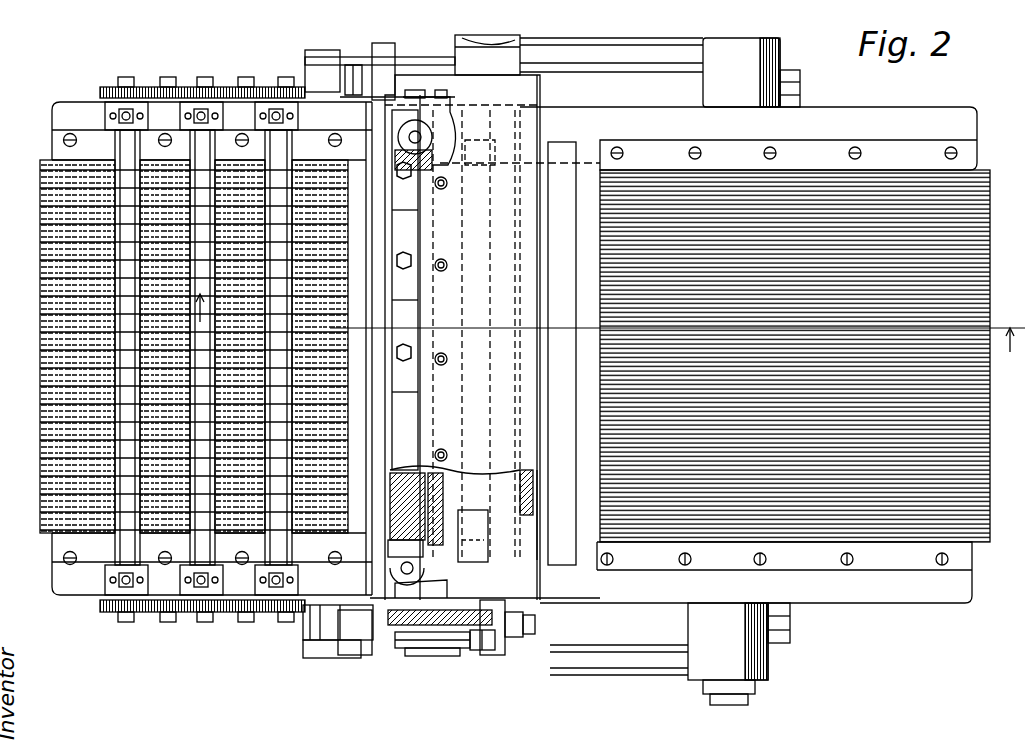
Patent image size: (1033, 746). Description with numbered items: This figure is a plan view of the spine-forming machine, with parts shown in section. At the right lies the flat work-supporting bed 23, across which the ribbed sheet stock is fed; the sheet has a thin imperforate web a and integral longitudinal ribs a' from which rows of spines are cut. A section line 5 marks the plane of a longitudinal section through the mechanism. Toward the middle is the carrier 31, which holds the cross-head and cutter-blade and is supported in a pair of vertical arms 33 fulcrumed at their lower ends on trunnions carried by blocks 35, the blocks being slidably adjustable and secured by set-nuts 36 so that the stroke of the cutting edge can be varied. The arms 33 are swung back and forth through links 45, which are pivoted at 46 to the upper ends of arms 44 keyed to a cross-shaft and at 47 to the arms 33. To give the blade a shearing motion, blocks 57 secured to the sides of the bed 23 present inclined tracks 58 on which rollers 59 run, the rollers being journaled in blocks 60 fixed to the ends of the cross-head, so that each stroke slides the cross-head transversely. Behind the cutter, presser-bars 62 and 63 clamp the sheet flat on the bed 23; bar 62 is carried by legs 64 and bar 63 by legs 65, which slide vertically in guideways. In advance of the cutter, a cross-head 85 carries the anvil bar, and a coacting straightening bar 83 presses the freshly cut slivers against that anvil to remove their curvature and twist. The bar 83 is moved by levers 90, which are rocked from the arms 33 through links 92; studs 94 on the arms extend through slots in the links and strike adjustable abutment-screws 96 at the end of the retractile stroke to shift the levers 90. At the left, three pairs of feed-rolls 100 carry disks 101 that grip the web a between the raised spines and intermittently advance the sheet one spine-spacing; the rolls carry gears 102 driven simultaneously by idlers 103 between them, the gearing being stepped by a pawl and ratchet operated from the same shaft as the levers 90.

The section line 5 is at (604, 332).
The work-supporting bed 23 is at (935, 604).
The carrier 31 is at (541, 125).
The vertical arms 33 is at (415, 625).
The blocks 35 is at (498, 658).
The set-nuts 36 is at (535, 624).
The arms 44 is at (800, 90).
The links 45 is at (654, 68).
The pivot 46 is at (750, 700).
The pivot 47 is at (493, 40).
The blocks 57 is at (445, 106).
The inclined side-faces or tracks 58 is at (452, 118).
The rollers 59 is at (432, 140).
The blocks 60 is at (430, 160).
The presser-bar 62 is at (580, 525).
The presser-bar 63 is at (492, 528).
The legs 64 is at (578, 148).
The legs 65 is at (496, 149).
The coacting bar 83 is at (380, 233).
The cross-head 85 is at (352, 276).
The levers 90 is at (300, 622).
The links 92 is at (345, 57).
The studs 94 is at (425, 656).
The adjustable abutment-screws 96 is at (478, 652).
The rolls 100 is at (118, 558).
The disks 101 is at (100, 266).
The gears 102 is at (112, 86).
The idlers 103 is at (178, 86).
The web a is at (795, 367).
The longitudinal ribs a' is at (800, 548).